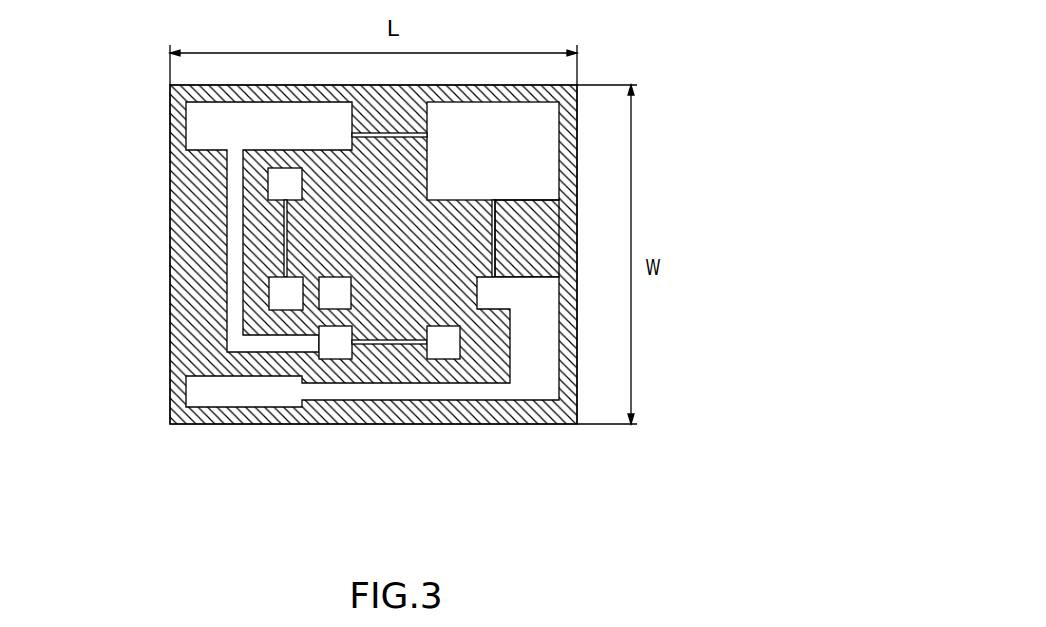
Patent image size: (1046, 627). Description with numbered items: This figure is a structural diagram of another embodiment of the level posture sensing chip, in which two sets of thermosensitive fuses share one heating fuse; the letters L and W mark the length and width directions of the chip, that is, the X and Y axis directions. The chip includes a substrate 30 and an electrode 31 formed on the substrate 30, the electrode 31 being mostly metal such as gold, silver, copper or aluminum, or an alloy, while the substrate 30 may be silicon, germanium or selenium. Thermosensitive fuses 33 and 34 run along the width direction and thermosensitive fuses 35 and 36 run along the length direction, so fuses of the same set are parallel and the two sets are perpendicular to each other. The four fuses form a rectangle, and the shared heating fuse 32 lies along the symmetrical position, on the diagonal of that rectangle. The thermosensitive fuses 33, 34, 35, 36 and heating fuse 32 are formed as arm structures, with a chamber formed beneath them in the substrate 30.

The substrate 30 is at (390, 416).
The electrode 31 is at (235, 185).
The heating fuse 32 is at (350, 275).
The thermosensitive fuse 33 is at (285, 233).
The thermosensitive fuse 34 is at (495, 258).
The thermosensitive fuse 35 is at (378, 341).
The thermosensitive fuse 36 is at (375, 134).